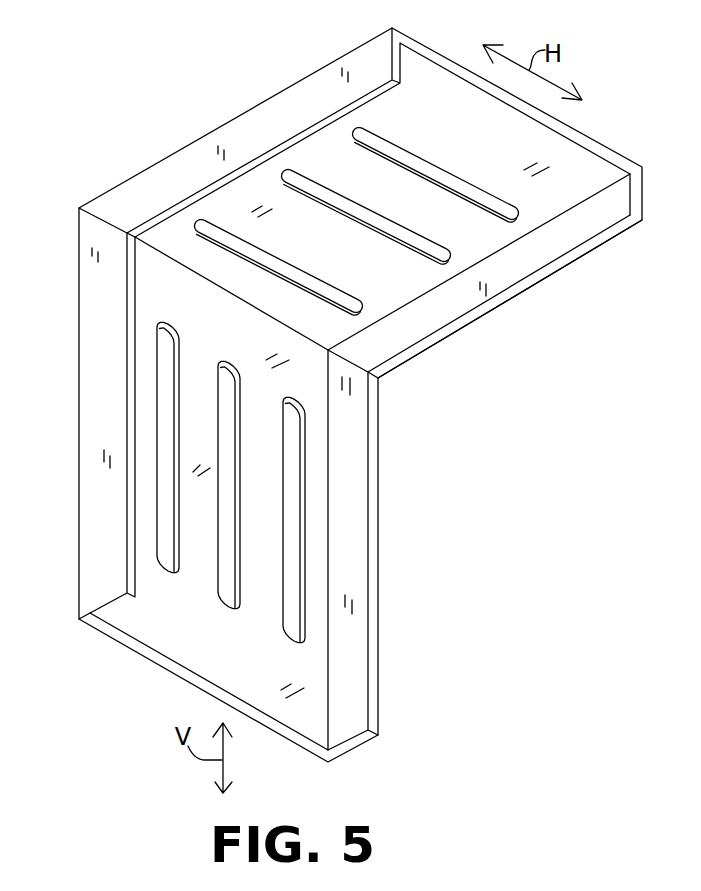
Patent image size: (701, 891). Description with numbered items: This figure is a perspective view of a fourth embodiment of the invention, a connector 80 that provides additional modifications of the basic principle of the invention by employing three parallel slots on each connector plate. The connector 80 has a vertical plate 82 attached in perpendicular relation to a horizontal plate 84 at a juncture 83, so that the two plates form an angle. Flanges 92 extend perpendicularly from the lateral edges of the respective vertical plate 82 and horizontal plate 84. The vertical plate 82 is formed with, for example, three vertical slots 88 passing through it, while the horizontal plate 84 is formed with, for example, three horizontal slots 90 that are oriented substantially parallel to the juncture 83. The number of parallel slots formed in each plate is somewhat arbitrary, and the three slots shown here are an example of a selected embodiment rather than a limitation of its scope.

The connector 80 is at (435, 503).
The vertical plate 82 is at (209, 493).
The juncture 83 is at (249, 302).
The horizontal plate 84 is at (378, 189).
The vertical slots 88 is at (165, 541).
The horizontal slots 90 is at (403, 235).
The flanges 92 is at (91, 537).